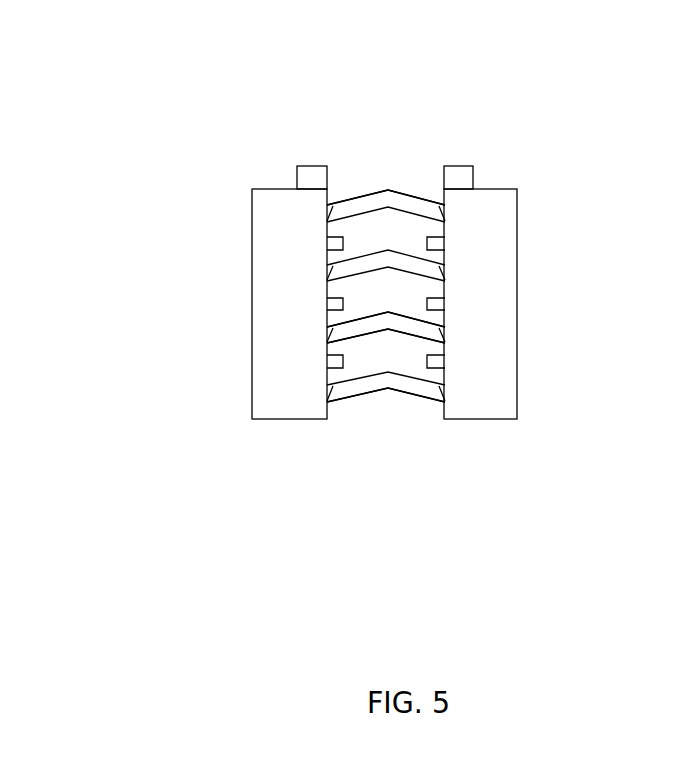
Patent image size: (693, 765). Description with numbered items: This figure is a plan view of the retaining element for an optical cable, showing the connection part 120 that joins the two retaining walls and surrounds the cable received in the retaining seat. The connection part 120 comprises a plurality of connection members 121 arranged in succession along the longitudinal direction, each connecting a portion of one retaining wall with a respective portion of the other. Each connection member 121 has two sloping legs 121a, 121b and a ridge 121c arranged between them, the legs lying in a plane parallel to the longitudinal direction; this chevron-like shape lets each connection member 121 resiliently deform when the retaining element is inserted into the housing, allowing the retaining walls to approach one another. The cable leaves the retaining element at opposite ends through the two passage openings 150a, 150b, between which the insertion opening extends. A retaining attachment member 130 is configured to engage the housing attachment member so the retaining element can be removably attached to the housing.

The connection part 120 is at (383, 390).
The connection member 121 is at (420, 328).
The sloping leg 121a is at (365, 323).
The sloping leg 121b is at (405, 323).
The ridge 121c is at (383, 308).
The retaining attachment member 130 is at (472, 165).
The passage opening 150a is at (408, 435).
The passage opening 150b is at (395, 172).